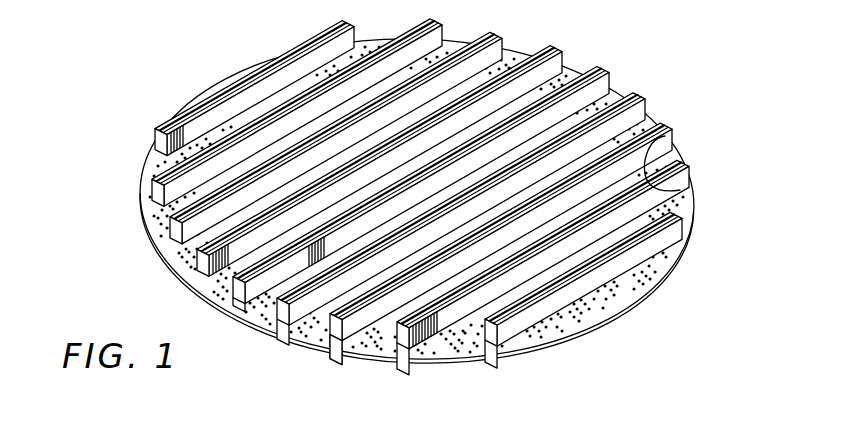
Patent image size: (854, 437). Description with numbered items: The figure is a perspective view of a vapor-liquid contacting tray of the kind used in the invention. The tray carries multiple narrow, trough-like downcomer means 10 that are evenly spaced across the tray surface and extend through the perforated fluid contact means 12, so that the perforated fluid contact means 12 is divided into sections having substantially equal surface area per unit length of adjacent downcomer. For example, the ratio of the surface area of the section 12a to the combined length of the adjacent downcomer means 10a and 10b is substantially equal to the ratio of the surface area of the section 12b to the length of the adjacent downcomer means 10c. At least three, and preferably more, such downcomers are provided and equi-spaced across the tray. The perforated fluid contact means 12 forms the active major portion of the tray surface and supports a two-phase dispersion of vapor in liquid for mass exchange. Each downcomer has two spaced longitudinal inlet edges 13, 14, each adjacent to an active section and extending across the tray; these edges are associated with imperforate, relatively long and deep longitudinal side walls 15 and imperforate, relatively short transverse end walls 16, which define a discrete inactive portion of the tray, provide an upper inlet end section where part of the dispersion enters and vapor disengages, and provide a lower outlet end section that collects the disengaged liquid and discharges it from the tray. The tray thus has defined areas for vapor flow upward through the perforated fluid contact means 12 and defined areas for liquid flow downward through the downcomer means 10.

The downcomer means 10 is at (507, 44).
The downcomer means 10a is at (556, 60).
The downcomer means 10b is at (603, 90).
The downcomer means 10c is at (664, 237).
The perforated fluid contact means 12 is at (375, 348).
The section of the perforated fluid contact means 12a is at (600, 78).
The section of the perforated fluid contact means 12b is at (618, 292).
The longitudinal inlet edge 13 is at (661, 142).
The longitudinal inlet edge 14 is at (680, 190).
The longitudinal side wall 15 is at (428, 332).
The transverse end wall 16 is at (323, 336).